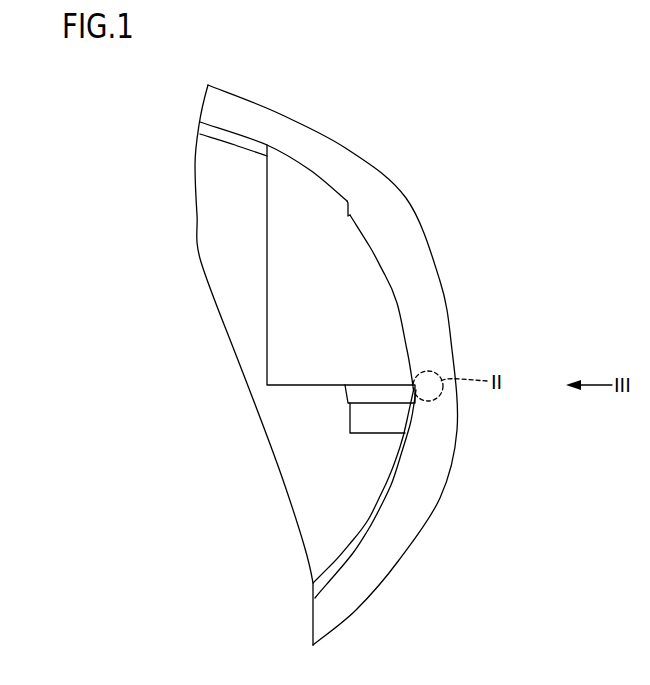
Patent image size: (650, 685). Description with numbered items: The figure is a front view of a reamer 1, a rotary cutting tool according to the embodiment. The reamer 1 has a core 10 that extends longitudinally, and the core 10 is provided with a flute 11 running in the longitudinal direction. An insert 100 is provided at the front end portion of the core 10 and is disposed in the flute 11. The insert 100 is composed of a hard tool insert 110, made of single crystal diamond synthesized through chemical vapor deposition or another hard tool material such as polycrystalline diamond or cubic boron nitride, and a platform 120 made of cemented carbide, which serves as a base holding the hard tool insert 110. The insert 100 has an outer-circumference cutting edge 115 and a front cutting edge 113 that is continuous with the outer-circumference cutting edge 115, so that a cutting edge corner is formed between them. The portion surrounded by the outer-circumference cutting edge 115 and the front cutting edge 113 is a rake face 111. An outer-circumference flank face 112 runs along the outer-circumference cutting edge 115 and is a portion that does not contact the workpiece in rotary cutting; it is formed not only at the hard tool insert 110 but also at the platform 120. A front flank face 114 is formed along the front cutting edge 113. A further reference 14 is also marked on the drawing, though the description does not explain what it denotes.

The reamer 1 is at (464, 99).
The core 10 is at (236, 97).
The flute 11 is at (268, 200).
The lamp chamber 14 is at (151, 390).
The insert 100 is at (384, 451).
The hard tool insert 110 is at (397, 360).
The rake face 111 is at (365, 385).
The outer-circumference flank face 112 is at (417, 391).
The front cutting edge 113 is at (377, 385).
The front flank face 114 is at (380, 397).
The outer-circumference cutting edge 115 is at (427, 370).
The platform 120 is at (365, 435).